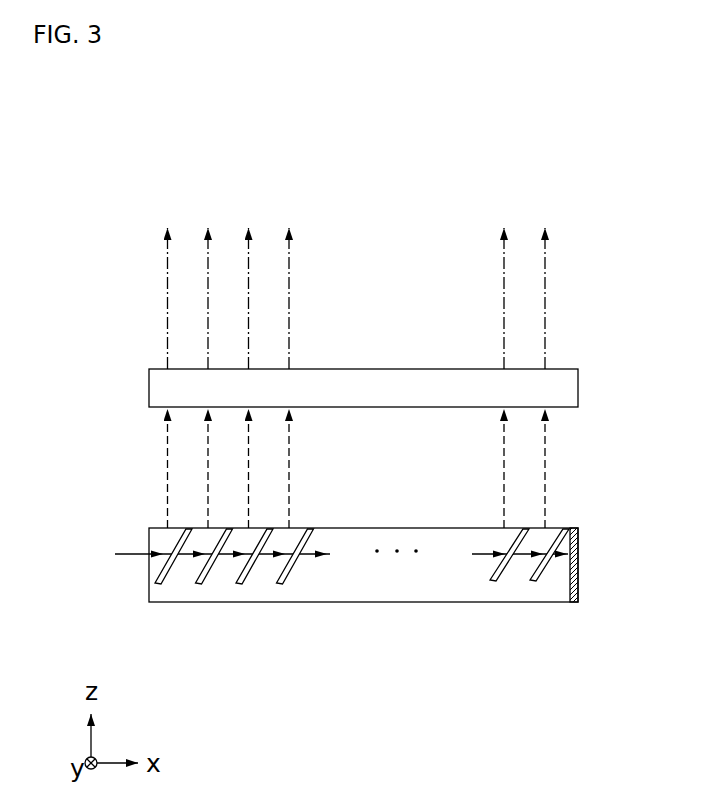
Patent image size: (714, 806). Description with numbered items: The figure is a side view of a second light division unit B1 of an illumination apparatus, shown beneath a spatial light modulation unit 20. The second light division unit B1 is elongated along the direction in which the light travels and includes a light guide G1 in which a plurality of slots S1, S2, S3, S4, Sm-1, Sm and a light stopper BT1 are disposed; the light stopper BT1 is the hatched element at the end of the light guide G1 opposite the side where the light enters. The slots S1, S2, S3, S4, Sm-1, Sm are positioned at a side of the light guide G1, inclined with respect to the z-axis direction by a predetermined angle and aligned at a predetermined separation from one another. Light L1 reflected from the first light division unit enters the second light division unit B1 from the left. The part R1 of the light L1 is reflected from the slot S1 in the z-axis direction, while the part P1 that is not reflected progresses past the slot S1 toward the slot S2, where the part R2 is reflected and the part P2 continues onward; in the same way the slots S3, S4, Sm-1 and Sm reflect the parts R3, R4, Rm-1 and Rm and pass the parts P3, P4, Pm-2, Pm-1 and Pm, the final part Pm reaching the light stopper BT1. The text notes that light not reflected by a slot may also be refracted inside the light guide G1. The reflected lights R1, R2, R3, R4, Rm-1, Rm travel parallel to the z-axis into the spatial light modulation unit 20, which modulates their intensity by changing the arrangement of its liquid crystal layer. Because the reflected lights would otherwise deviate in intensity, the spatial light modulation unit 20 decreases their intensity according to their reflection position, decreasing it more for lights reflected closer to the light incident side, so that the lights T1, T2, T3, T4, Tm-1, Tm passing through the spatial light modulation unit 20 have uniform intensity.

The spatial light modulation unit 20 is at (583, 379).
The light passing through spatial light modulation unit T1 is at (168, 312).
The light passing through spatial light modulation unit T2 is at (208, 312).
The light passing through spatial light modulation unit T3 is at (248, 312).
The light passing through spatial light modulation unit T4 is at (289, 312).
The light passing through spatial light modulation unit Tm-1 is at (504, 312).
The light passing through spatial light modulation unit Tm is at (545, 306).
The reflected part of light R1 is at (168, 470).
The reflected part of light R2 is at (208, 470).
The reflected part of light R3 is at (248, 470).
The reflected part of light R4 is at (289, 470).
The reflected part of light Rm-1 is at (504, 470).
The reflected part of light Rm is at (545, 463).
The incident light L1 is at (126, 538).
The second light division unit B1 is at (355, 623).
The light guide G1 is at (402, 590).
The light stopper BT1 is at (573, 527).
The slot S1 is at (158, 593).
The slot S2 is at (200, 593).
The slot S3 is at (240, 593).
The slot S4 is at (280, 593).
The slot Sm-1 is at (495, 584).
The slot Sm is at (537, 582).
The light progressing past slot P1 is at (188, 592).
The light progressing past slot P2 is at (228, 592).
The light progressing past slot P3 is at (268, 592).
The light progressing past slot P4 is at (310, 592).
The light progressing past slot Pm-2 is at (485, 556).
The light progressing past slot Pm-1 is at (522, 556).
The light progressing past slot Pm is at (562, 592).